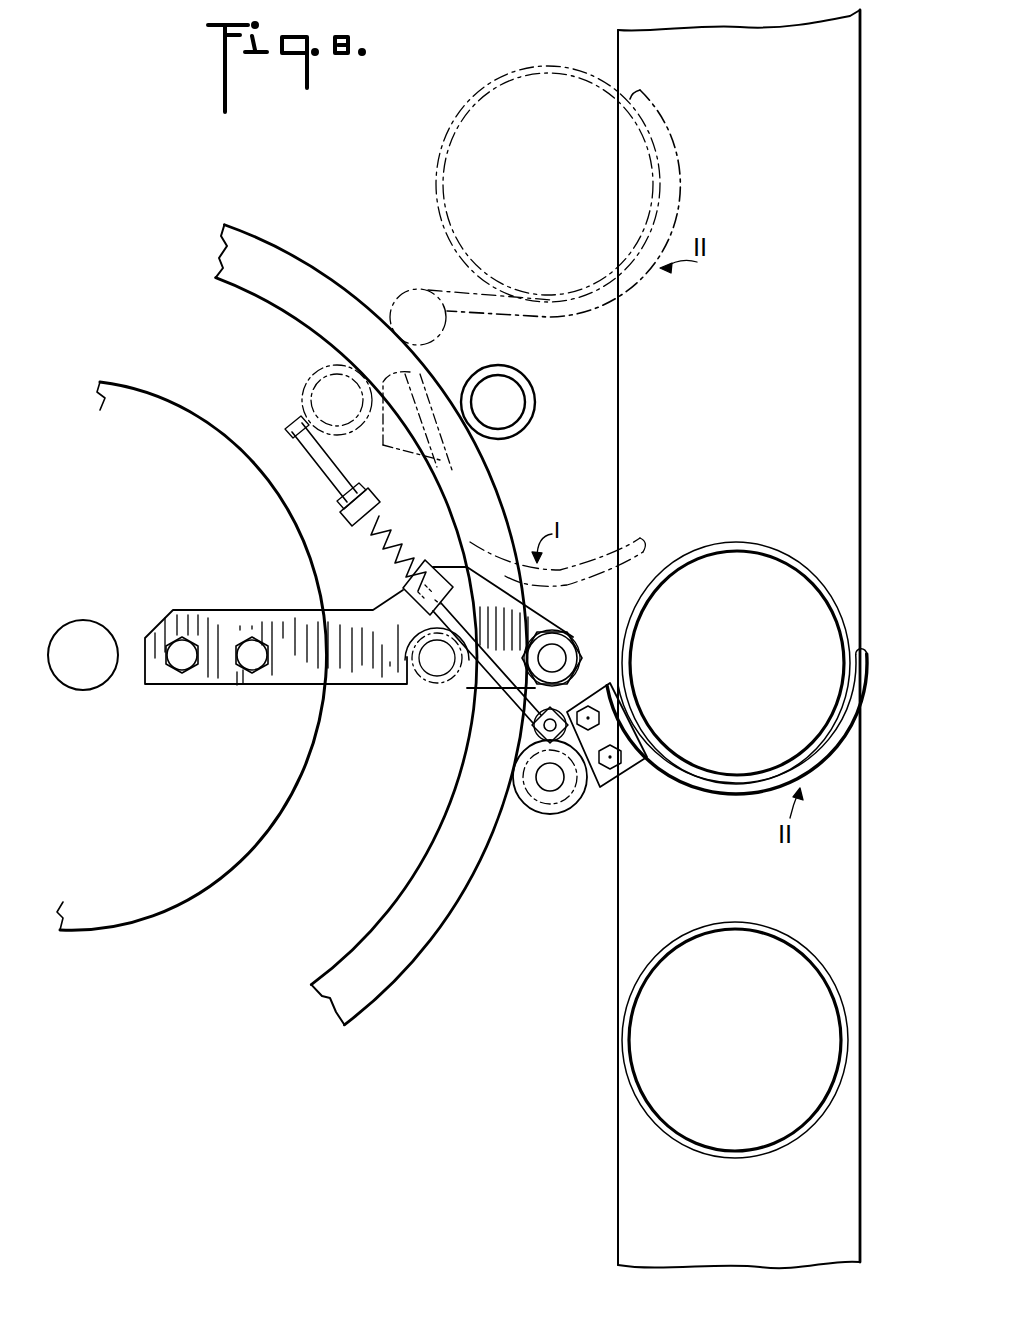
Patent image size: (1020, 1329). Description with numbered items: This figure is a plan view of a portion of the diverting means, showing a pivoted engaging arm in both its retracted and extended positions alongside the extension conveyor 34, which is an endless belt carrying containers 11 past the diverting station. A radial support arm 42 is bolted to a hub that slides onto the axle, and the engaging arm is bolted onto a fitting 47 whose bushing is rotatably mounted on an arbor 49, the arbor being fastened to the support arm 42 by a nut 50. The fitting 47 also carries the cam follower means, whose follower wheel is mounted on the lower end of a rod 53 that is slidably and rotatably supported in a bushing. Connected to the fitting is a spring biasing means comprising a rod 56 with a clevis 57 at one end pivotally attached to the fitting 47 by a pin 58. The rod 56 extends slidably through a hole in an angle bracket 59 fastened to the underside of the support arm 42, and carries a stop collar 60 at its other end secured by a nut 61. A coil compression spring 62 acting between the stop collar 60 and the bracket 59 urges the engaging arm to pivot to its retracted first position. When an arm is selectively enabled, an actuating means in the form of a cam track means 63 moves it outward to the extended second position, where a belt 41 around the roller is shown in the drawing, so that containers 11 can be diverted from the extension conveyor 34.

The container 11 is at (782, 572).
The extension conveyor 34 is at (848, 354).
The belt 41 is at (684, 778).
The radial support arm 42 is at (370, 678).
The fitting 47 is at (596, 790).
The arbor 49 is at (554, 646).
The nut 50 is at (575, 643).
The rod 53 is at (550, 791).
The rod 56 is at (458, 620).
The clevis 57 is at (528, 706).
The pin 58 is at (530, 718).
The angle bracket 59 is at (402, 590).
The stop collar 60 is at (350, 524).
The nut 61 is at (352, 510).
The coil compression spring 62 is at (385, 555).
The cam track means 63 is at (479, 880).